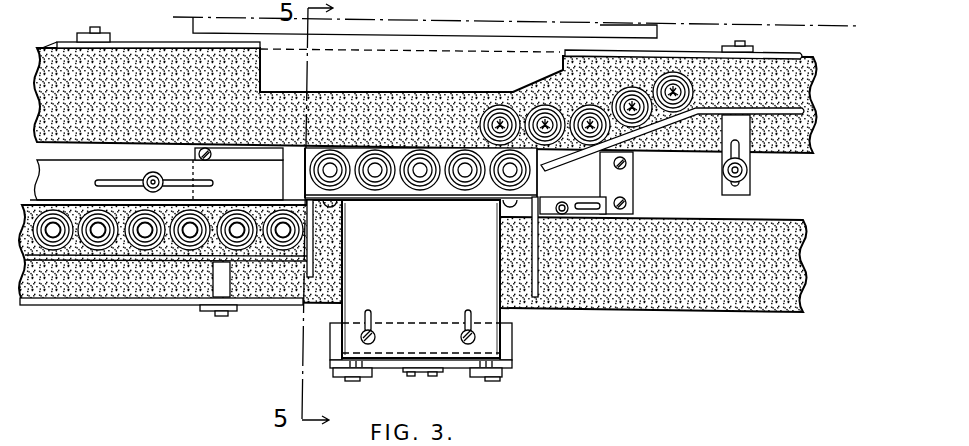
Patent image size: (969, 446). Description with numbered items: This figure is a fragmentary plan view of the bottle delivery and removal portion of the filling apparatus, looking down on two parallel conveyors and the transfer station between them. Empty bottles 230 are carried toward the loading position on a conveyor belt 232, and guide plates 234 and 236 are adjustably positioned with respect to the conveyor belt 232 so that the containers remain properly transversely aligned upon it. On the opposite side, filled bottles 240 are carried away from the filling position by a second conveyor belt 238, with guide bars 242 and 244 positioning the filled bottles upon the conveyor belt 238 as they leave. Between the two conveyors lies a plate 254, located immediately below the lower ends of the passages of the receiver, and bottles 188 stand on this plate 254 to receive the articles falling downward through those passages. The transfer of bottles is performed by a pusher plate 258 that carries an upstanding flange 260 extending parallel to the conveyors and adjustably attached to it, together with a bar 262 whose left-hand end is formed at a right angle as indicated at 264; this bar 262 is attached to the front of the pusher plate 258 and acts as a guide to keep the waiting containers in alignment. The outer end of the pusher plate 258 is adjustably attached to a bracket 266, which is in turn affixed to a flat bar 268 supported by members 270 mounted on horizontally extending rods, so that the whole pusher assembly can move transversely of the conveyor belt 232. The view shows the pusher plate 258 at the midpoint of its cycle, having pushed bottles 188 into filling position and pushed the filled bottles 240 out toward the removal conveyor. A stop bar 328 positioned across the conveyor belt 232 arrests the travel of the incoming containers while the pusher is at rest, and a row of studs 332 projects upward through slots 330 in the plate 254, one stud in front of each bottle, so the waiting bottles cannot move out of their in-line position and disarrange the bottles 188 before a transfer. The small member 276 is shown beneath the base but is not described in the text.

The bottles 188 is at (349, 147).
The bottles 230 is at (189, 250).
The conveyor belt 232 is at (132, 291).
The guide plate 234 is at (87, 202).
The guide plate 236 is at (51, 259).
The conveyor belt 238 is at (160, 117).
The bottles 240 is at (673, 86).
The guide bar 242 is at (718, 94).
The guide bar 244 is at (718, 60).
The plate 254 is at (305, 158).
The pusher plate 258 is at (469, 280).
The upstanding flange 260 is at (405, 206).
The bar 262 is at (368, 206).
The right-angle end of bar 264 is at (313, 240).
The bracket 266 is at (514, 341).
The flat bar 268 is at (512, 362).
The members 270 is at (343, 369).
The center tab 276 is at (441, 377).
The stop bar 328 is at (539, 250).
The slots 330 is at (313, 167).
The studs 332 is at (391, 146).